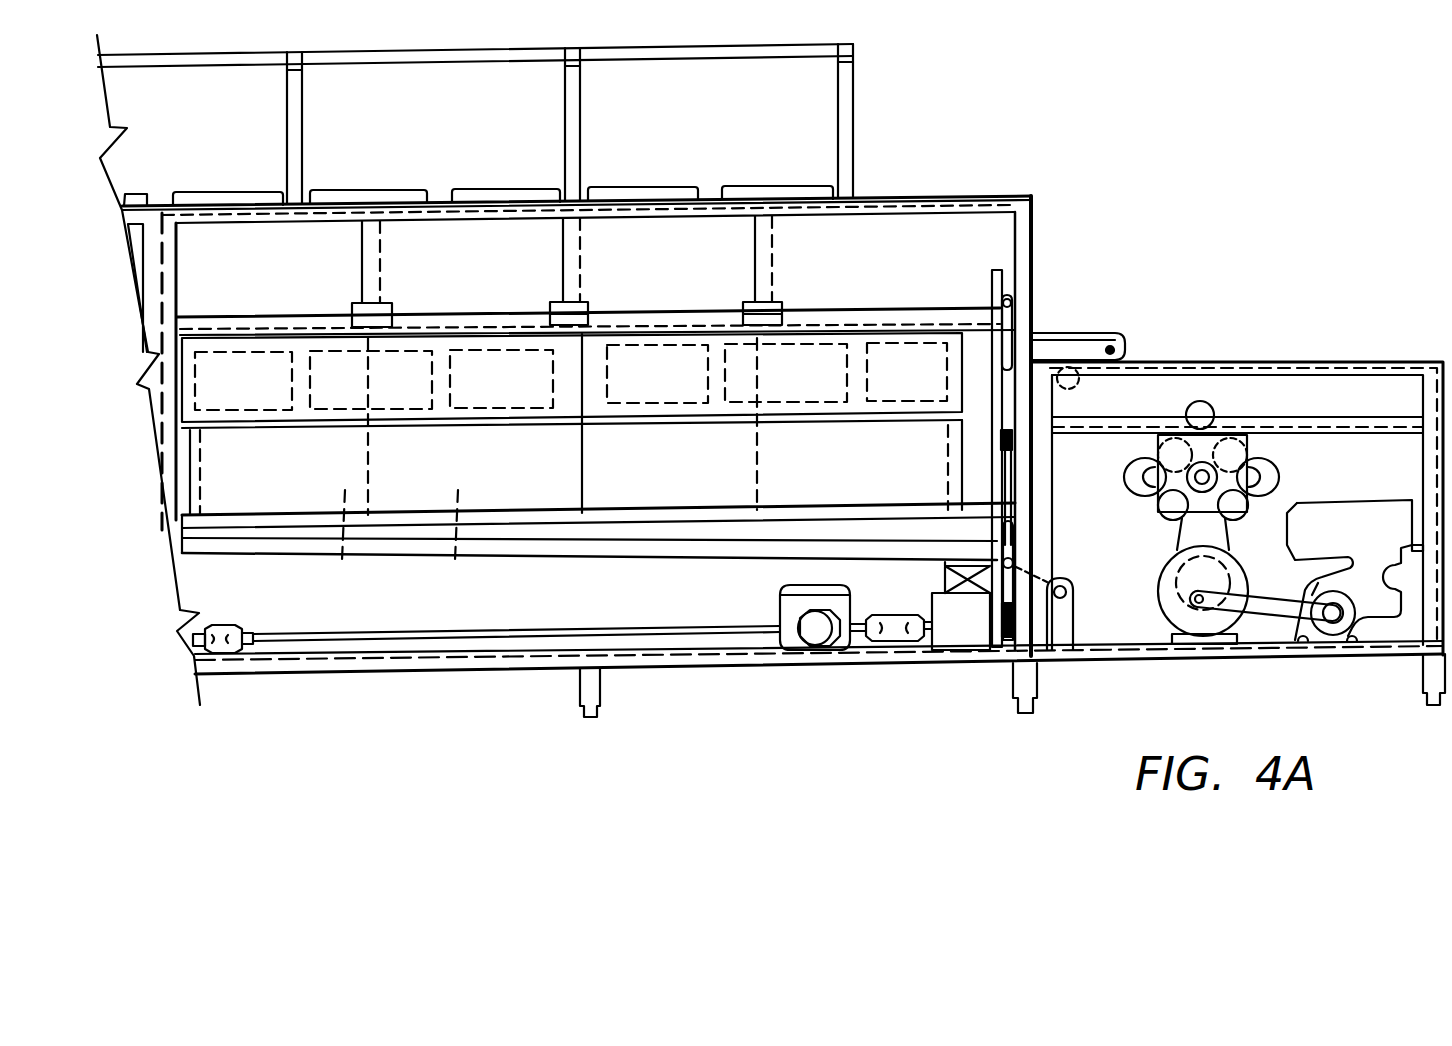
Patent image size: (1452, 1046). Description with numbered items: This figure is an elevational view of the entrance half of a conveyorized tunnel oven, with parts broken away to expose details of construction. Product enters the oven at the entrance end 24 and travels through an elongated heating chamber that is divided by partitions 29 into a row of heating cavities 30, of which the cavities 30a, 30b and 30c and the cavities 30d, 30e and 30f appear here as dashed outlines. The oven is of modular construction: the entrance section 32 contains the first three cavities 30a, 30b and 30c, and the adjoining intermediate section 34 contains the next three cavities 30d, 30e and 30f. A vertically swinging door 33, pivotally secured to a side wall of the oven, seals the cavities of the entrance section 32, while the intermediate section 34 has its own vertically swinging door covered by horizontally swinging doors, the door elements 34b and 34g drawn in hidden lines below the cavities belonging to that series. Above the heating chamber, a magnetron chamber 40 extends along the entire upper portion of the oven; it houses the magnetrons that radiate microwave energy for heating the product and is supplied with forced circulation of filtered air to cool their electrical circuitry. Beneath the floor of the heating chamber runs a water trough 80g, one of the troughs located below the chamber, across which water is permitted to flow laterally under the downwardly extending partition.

The entrance end 24 is at (1178, 337).
The partitions 29 is at (453, 363).
The heating cavities 30 is at (571, 377).
The heating cavity 30a is at (873, 395).
The heating cavity 30b is at (742, 397).
The heating cavity 30c is at (622, 397).
The heating cavity 30d is at (470, 400).
The heating cavity 30e is at (337, 400).
The heating cavity 30f is at (217, 403).
The entrance section 32 is at (833, 663).
The vertically swinging door 33 is at (620, 343).
The intermediate section 34 is at (500, 673).
The hidden partition 34b is at (336, 495).
The hidden partition 34g is at (452, 495).
The magnetron chamber 40 is at (803, 118).
The shelf 80g is at (692, 562).